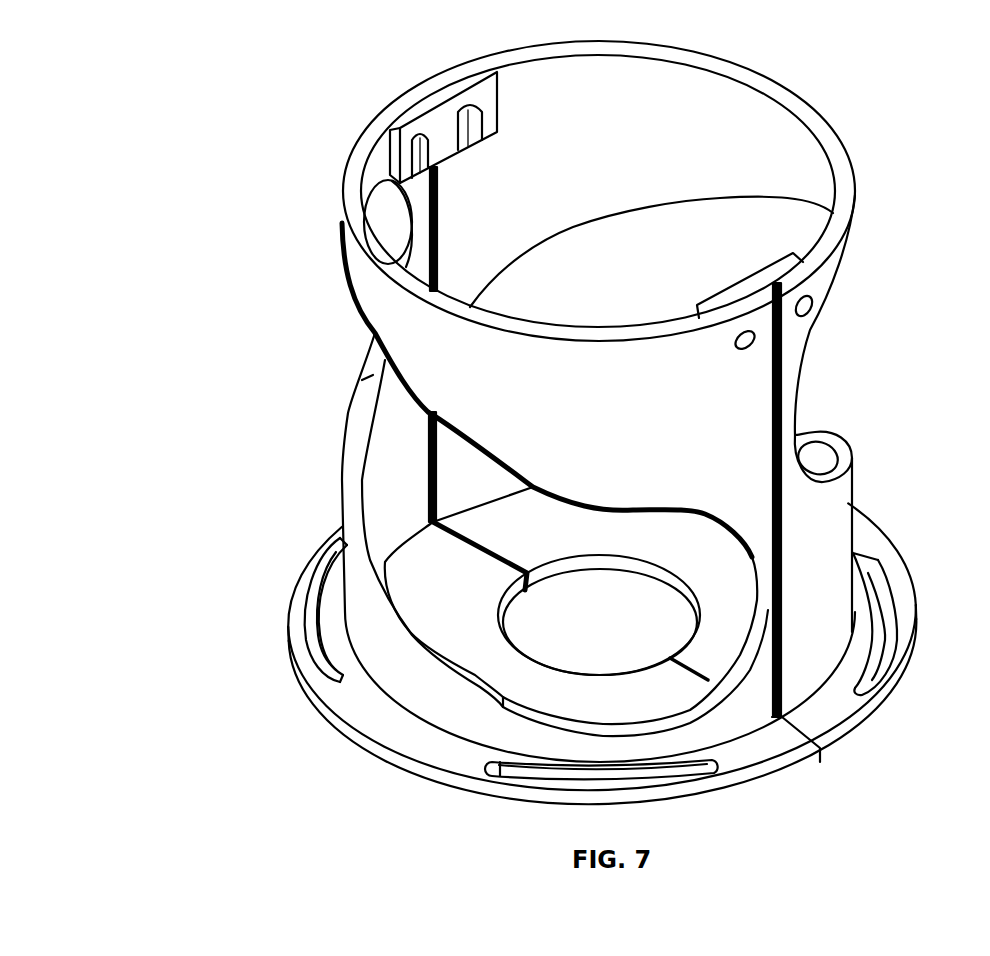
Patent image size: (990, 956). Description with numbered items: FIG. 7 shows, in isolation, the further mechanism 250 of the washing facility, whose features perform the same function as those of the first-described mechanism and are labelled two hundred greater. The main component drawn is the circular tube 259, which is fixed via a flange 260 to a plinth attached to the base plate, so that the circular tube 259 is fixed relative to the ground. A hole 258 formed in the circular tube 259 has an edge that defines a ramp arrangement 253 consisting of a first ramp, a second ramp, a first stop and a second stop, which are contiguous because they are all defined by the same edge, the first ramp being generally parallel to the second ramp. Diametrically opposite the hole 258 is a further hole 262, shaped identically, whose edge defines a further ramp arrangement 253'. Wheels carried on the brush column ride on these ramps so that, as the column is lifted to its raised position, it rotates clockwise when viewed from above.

The further mechanism 250 is at (366, 107).
The hole 258 is at (858, 320).
The further ramp arrangement 253' is at (853, 431).
The hole 262 is at (303, 436).
The ramp arrangement 253 is at (465, 548).
The flange 260 is at (860, 540).
The circular tube 259 is at (392, 663).